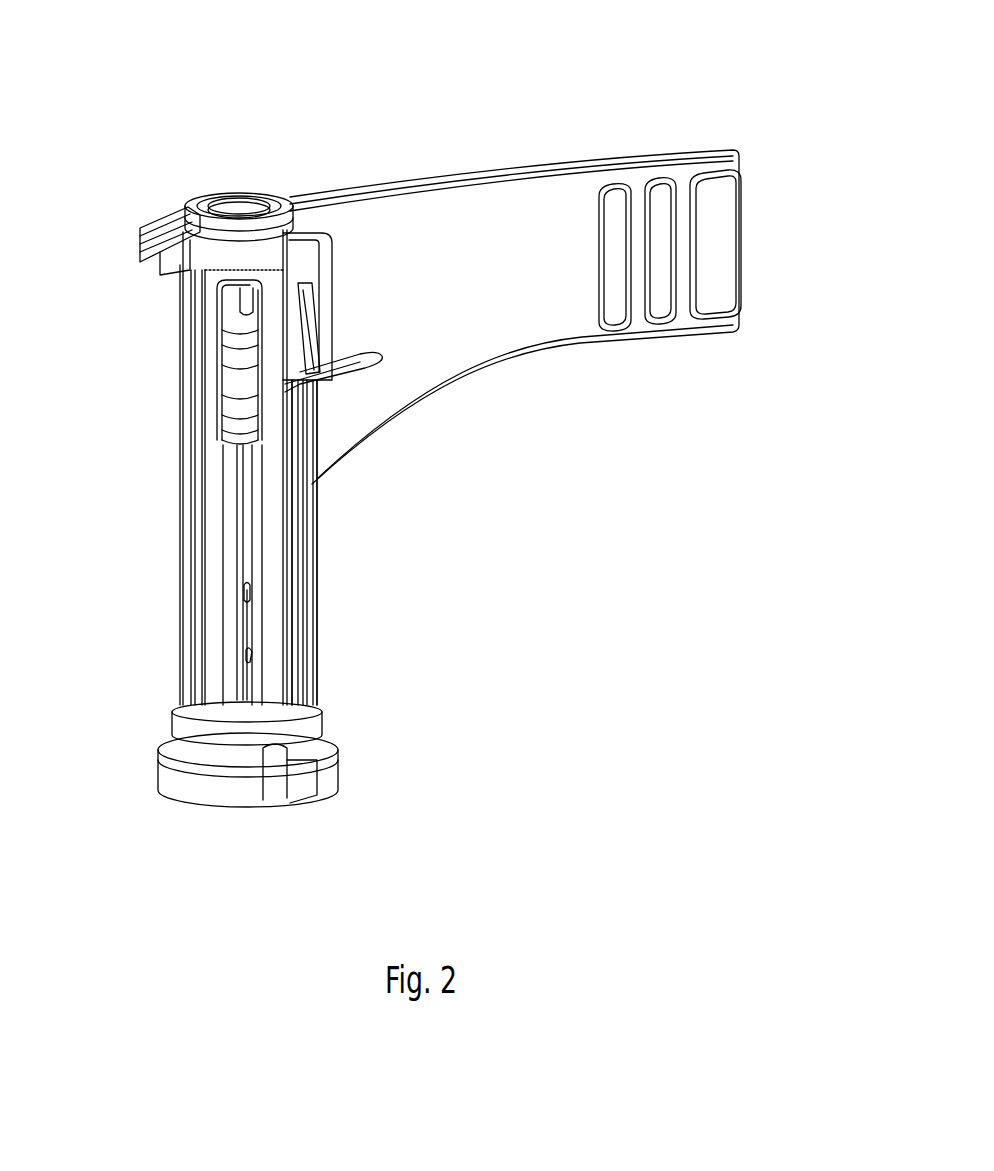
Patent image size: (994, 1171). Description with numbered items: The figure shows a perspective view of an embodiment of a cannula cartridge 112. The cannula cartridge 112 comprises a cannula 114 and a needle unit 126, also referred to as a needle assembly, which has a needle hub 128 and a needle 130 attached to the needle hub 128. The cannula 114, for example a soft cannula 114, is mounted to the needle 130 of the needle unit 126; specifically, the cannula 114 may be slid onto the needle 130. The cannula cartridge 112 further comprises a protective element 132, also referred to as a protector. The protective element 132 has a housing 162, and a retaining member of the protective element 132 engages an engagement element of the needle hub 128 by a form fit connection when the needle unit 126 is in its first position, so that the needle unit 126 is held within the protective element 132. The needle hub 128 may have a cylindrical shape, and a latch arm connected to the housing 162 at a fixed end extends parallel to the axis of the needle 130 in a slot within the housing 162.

The cannula cartridge 112 is at (818, 154).
The needle unit 126 is at (165, 421).
The needle hub 128 is at (228, 375).
The cannula 114 is at (247, 547).
The needle 130 is at (248, 627).
The protective element 132 is at (277, 533).
The housing 162 is at (373, 542).